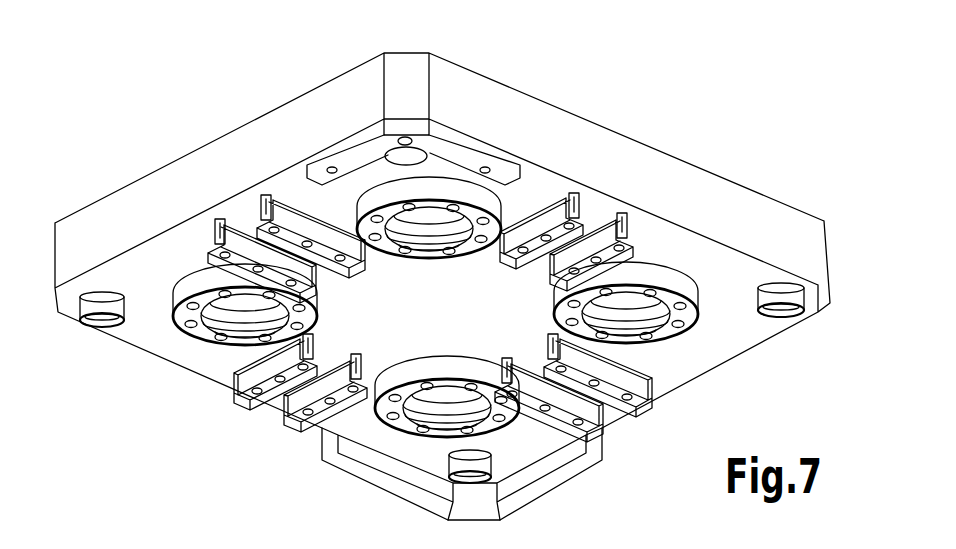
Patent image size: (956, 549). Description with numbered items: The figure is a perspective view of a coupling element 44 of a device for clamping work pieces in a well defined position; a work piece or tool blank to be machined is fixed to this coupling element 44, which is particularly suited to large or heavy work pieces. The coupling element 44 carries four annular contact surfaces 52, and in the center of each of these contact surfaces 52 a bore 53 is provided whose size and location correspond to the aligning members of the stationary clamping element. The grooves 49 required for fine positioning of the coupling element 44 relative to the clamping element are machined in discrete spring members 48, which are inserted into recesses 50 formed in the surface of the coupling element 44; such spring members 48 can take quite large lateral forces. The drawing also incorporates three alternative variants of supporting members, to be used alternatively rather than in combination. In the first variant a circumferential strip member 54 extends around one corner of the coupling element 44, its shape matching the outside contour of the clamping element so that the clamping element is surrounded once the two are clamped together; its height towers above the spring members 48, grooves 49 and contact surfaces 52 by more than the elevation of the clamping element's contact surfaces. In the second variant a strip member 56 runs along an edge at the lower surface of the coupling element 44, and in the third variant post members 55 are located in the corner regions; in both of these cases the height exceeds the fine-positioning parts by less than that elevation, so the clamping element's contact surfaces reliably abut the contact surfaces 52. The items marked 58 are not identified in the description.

The coupling element 44 is at (757, 77).
The spring members 48 is at (588, 196).
The grooves 49 is at (342, 350).
The recesses 50 is at (628, 206).
The annular contact surfaces 52 is at (202, 331).
The bore 53 is at (442, 248).
The circumferential strip member 54 is at (603, 448).
The post members 55 is at (84, 342).
The strip member 56 is at (463, 133).
The mounting hole 58 is at (792, 333).